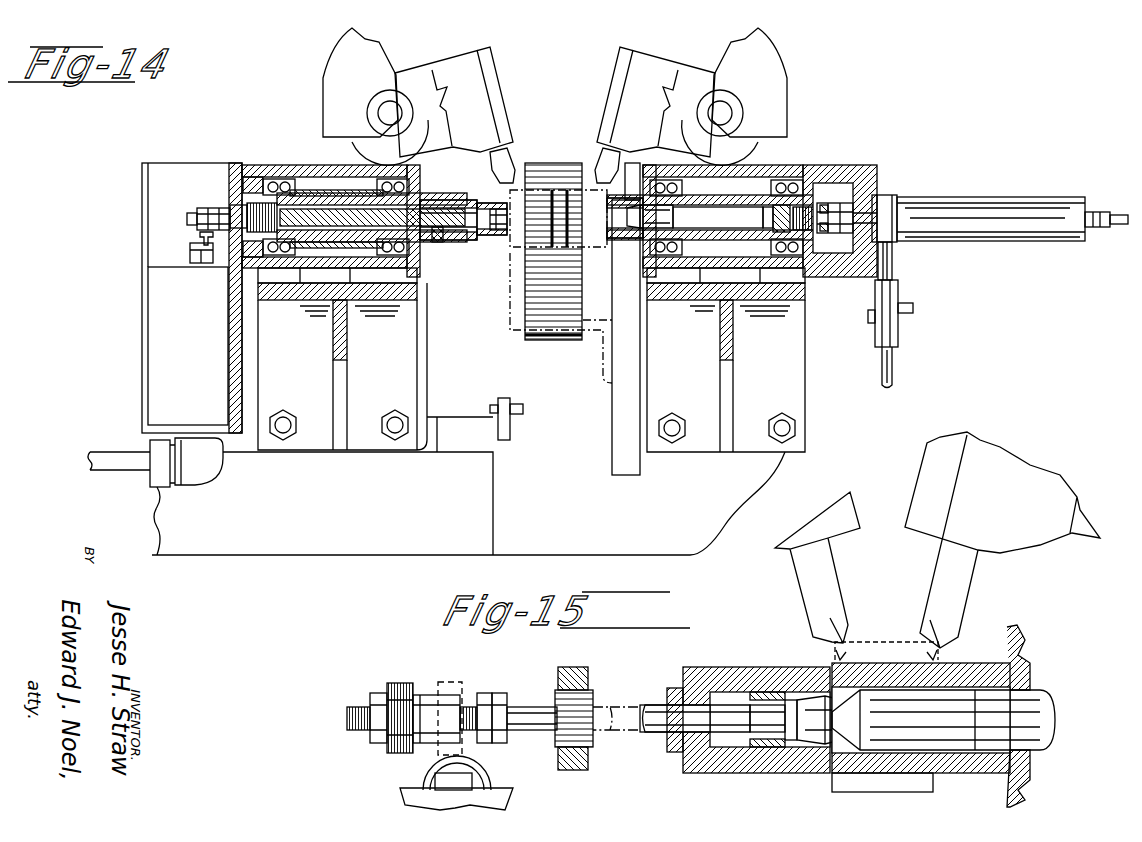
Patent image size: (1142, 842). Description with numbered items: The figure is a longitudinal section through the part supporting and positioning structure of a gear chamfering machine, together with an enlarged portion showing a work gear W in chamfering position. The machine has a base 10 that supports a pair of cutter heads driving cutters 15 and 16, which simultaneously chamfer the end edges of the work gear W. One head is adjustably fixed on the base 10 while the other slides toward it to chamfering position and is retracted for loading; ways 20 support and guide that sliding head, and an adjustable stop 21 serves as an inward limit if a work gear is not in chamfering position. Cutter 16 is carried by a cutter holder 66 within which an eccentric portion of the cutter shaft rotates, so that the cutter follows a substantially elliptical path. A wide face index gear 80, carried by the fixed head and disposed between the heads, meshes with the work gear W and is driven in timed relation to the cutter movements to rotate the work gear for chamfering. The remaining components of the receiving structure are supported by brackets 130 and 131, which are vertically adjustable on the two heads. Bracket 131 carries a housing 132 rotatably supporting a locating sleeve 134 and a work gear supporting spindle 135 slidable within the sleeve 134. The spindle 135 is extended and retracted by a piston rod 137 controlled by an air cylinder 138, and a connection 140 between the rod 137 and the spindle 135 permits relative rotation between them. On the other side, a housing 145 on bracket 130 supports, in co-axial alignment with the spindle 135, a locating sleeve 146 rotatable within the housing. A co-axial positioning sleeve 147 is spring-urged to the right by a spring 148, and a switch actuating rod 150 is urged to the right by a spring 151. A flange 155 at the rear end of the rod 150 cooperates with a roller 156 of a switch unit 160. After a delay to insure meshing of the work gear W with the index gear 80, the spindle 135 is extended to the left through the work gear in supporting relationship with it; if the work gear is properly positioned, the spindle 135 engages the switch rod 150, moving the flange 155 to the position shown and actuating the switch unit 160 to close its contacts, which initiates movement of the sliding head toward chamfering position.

In FIG. 14, the base 10 is at (485, 524).
In FIG. 14, the cutter 15 is at (511, 166).
In FIG. 15, the cutter 15 is at (830, 609).
In FIG. 14, the cutter 16 is at (603, 166).
In FIG. 15, the cutter 16 is at (953, 609).
In FIG. 14, the ways 20 is at (483, 440).
In FIG. 14, the adjustable stop 21 is at (505, 418).
In FIG. 14, the cutter holder 66 is at (648, 63).
In FIG. 15, the cutter holder 66 is at (1016, 473).
In FIG. 14, the index gear 80 is at (572, 341).
In FIG. 14, the bracket 130 is at (408, 340).
In FIG. 14, the bracket 131 is at (795, 334).
In FIG. 14, the housing 132 is at (758, 175).
In FIG. 14, the locating sleeve 134 is at (610, 236).
In FIG. 15, the locating sleeve 134 is at (971, 678).
In FIG. 14, the work gear supporting spindle 135 is at (636, 236).
In FIG. 15, the work gear supporting spindle 135 is at (1050, 700).
In FIG. 14, the piston rod 137 is at (850, 204).
In FIG. 14, the air cylinder 138 is at (1032, 238).
In FIG. 14, the connection 140 is at (828, 191).
In FIG. 14, the housing 145 is at (262, 178).
In FIG. 14, the locating sleeve 146 is at (462, 203).
In FIG. 15, the locating sleeve 146 is at (787, 667).
In FIG. 14, the positioning sleeve 147 is at (498, 234).
In FIG. 15, the positioning sleeve 147 is at (822, 752).
In FIG. 14, the spring 148 is at (335, 193).
In FIG. 14, the switch actuating rod 150 is at (426, 200).
In FIG. 15, the switch actuating rod 150 is at (683, 718).
In FIG. 14, the spring 151 is at (440, 240).
In FIG. 15, the spring 151 is at (770, 750).
In FIG. 14, the flange 155 is at (208, 208).
In FIG. 15, the flange 155 is at (400, 683).
In FIG. 14, the roller 156 is at (198, 233).
In FIG. 14, the switch unit 160 is at (190, 252).
In FIG. 15, the switch unit 160 is at (498, 797).
In FIG. 15, the work gear W is at (886, 652).